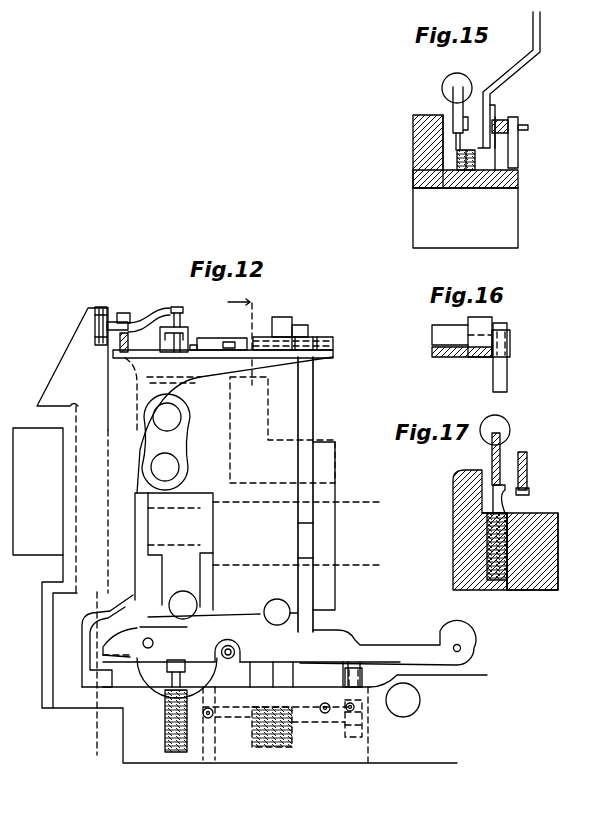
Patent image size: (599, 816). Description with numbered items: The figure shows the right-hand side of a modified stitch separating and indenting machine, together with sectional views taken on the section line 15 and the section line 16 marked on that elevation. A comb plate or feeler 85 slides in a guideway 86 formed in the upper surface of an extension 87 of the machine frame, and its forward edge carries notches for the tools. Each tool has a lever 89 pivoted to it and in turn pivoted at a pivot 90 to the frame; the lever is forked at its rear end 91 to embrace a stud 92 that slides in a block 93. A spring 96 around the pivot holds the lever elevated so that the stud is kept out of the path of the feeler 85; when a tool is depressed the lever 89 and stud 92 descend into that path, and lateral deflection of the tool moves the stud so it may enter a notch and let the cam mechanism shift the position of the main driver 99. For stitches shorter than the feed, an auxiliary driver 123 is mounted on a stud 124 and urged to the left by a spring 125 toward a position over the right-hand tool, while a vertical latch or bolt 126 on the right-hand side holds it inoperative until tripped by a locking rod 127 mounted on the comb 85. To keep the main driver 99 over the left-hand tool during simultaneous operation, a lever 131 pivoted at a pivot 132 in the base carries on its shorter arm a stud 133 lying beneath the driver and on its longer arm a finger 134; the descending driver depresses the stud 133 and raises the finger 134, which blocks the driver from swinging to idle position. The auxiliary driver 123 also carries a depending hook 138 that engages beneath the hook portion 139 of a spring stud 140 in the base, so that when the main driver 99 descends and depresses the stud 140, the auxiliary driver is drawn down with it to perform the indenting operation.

In FIG. 12, the section line 15- 15 is at (96, 674).
In FIG. 12, the section line 16- 16 is at (247, 343).
In FIG. 16, the comb plate or feeler 85 is at (435, 355).
In FIG. 12, the guideway 86 is at (228, 352).
In FIG. 12, the extension of the machine frame 87 is at (145, 392).
In FIG. 12, the lever 89 is at (144, 314).
In FIG. 12, the pivot 90 is at (123, 317).
In FIG. 12, the forked rear end 91 is at (181, 312).
In FIG. 12, the stud 92 is at (188, 320).
In FIG. 12, the block 93 is at (160, 340).
In FIG. 12, the spring 96 is at (117, 342).
In FIG. 12, the main driver 99 is at (200, 610).
In FIG. 15, the main driver 99 is at (453, 105).
In FIG. 17, the main driver 99 is at (493, 457).
In FIG. 12, the auxiliary driver 123 is at (340, 645).
In FIG. 15, the auxiliary driver 123 is at (485, 107).
In FIG. 12, the stud 124 is at (467, 668).
In FIG. 15, the spring 125 is at (590, 110).
In FIG. 17, the spring 125 is at (528, 460).
In FIG. 12, the latch or bolt 126 is at (308, 543).
In FIG. 15, the latch or bolt 126 is at (527, 70).
In FIG. 16, the latch or bolt 126 is at (505, 378).
In FIG. 12, the locking rod 127 is at (270, 328).
In FIG. 16, the locking rod 127 is at (508, 335).
In FIG. 12, the lever 131 is at (233, 715).
In FIG. 12, the pivot 132 is at (325, 713).
In FIG. 15, the pivot 132 is at (464, 151).
In FIG. 12, the stud 133 is at (350, 678).
In FIG. 12, the finger 134 is at (214, 685).
In FIG. 17, the depending hook 138 is at (529, 492).
In FIG. 17, the hook portion 139 is at (505, 493).
In FIG. 17, the spring stud 140 is at (492, 500).